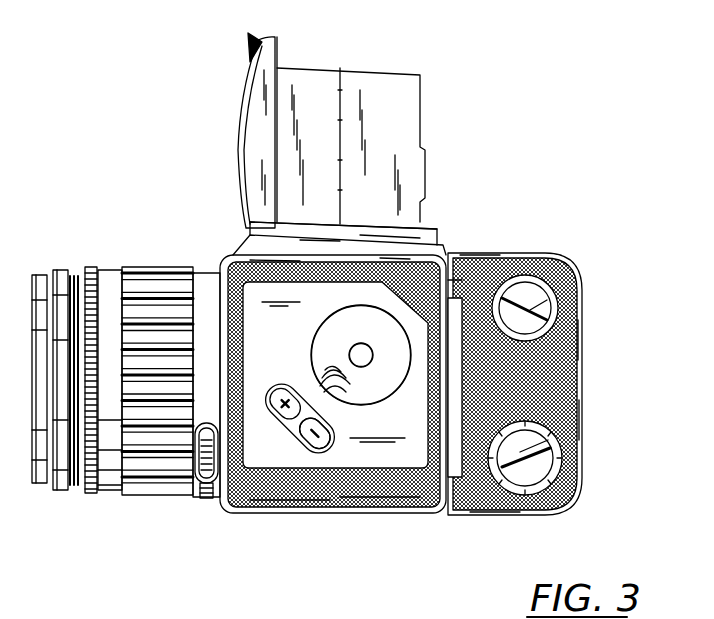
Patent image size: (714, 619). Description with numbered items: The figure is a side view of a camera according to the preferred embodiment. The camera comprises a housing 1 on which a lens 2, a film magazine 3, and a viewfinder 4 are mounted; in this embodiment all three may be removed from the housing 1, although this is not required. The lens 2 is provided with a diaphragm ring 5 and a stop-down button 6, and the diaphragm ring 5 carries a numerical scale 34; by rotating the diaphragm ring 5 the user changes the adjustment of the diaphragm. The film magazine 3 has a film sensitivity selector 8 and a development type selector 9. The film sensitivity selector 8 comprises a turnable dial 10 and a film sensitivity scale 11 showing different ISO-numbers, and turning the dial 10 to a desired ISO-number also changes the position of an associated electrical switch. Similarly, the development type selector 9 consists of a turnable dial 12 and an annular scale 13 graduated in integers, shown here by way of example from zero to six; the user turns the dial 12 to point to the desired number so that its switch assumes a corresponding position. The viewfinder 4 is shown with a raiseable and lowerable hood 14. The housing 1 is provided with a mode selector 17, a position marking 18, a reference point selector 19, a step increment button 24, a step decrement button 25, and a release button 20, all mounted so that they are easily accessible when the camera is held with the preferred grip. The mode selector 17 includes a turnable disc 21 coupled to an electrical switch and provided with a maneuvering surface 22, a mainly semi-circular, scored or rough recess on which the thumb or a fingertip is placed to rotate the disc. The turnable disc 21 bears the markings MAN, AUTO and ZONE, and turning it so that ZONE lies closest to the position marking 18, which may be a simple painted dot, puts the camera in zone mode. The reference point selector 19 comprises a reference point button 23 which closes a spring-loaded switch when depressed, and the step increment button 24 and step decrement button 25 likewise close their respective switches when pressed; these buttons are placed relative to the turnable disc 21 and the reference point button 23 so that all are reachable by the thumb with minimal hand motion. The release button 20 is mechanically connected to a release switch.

The housing 1 is at (368, 516).
The lens 2 is at (53, 264).
The film magazine 3 is at (510, 252).
The viewfinder 4 is at (360, 85).
The diaphragm ring 5 is at (90, 267).
The stop-down button 6 is at (199, 497).
The film sensitivity selector 8 is at (557, 337).
The development type selector 9 is at (555, 422).
The turnable dial 10 is at (557, 292).
The film sensitivity scale 11 is at (560, 320).
The turnable dial 12 is at (543, 447).
The annular scale 13 is at (553, 468).
The hood 14 is at (240, 133).
The mode selector 17 is at (373, 412).
The position marking 18 is at (398, 313).
The reference point selector 19 is at (360, 370).
The release button 20 is at (206, 497).
The turnable disc 21 is at (385, 390).
The maneuvering surface 22 is at (318, 378).
The reference point button 23 is at (349, 356).
The step increment button 24 is at (273, 398).
The step decrement button 25 is at (318, 440).
The numerical scale 34 is at (108, 277).